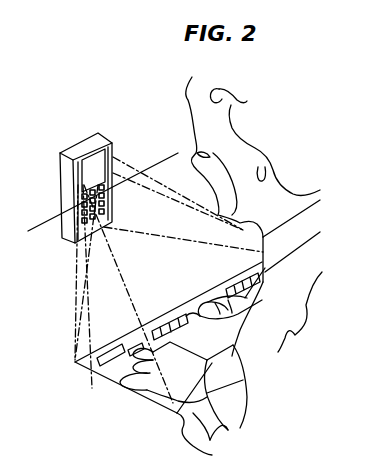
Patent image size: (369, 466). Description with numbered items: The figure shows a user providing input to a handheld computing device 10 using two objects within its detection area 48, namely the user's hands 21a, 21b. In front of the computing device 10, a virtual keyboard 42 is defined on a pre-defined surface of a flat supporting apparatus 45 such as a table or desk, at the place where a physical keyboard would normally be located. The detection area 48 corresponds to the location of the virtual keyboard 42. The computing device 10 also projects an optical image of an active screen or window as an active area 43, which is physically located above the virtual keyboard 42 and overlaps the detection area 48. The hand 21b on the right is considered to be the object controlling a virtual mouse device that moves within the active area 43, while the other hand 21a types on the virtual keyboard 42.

The handheld computing device 10 is at (73, 143).
The detection area 48 is at (125, 240).
The supporting apparatus 45 is at (55, 302).
The virtual keyboard 42 is at (90, 373).
The active area 43 is at (183, 336).
The hand of user 21a is at (228, 298).
The hand of user 21b is at (186, 433).